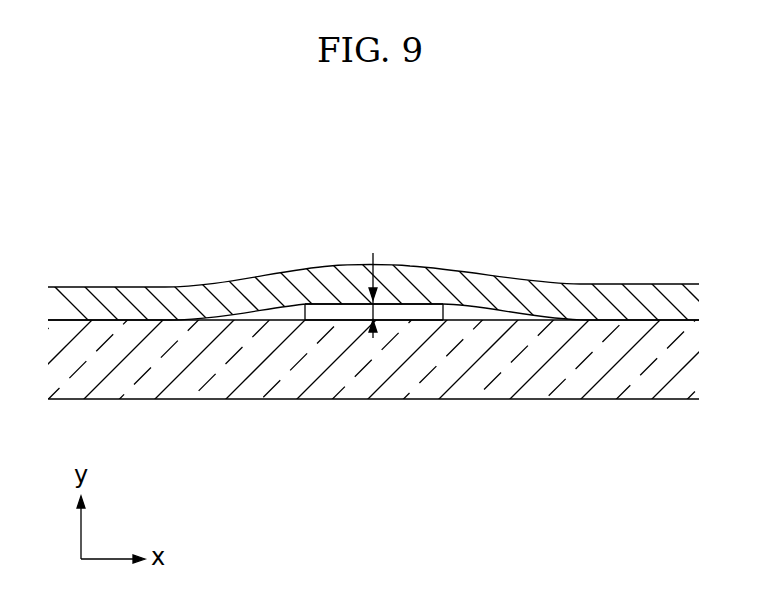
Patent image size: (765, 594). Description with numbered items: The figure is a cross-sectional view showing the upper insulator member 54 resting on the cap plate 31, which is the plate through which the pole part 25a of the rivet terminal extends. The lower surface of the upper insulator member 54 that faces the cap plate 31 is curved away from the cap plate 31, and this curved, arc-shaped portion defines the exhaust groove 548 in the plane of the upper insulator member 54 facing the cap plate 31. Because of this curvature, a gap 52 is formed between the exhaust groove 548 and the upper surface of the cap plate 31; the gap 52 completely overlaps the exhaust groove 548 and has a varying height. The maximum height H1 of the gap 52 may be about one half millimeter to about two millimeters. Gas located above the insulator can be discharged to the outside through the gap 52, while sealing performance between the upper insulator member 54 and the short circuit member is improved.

The cap plate 31 is at (250, 399).
The upper insulator member 54 is at (260, 275).
The gap 52 is at (289, 309).
The exhaust groove 548 is at (487, 310).
The pole part 25a is at (415, 312).
The maximum height H1 is at (377, 308).